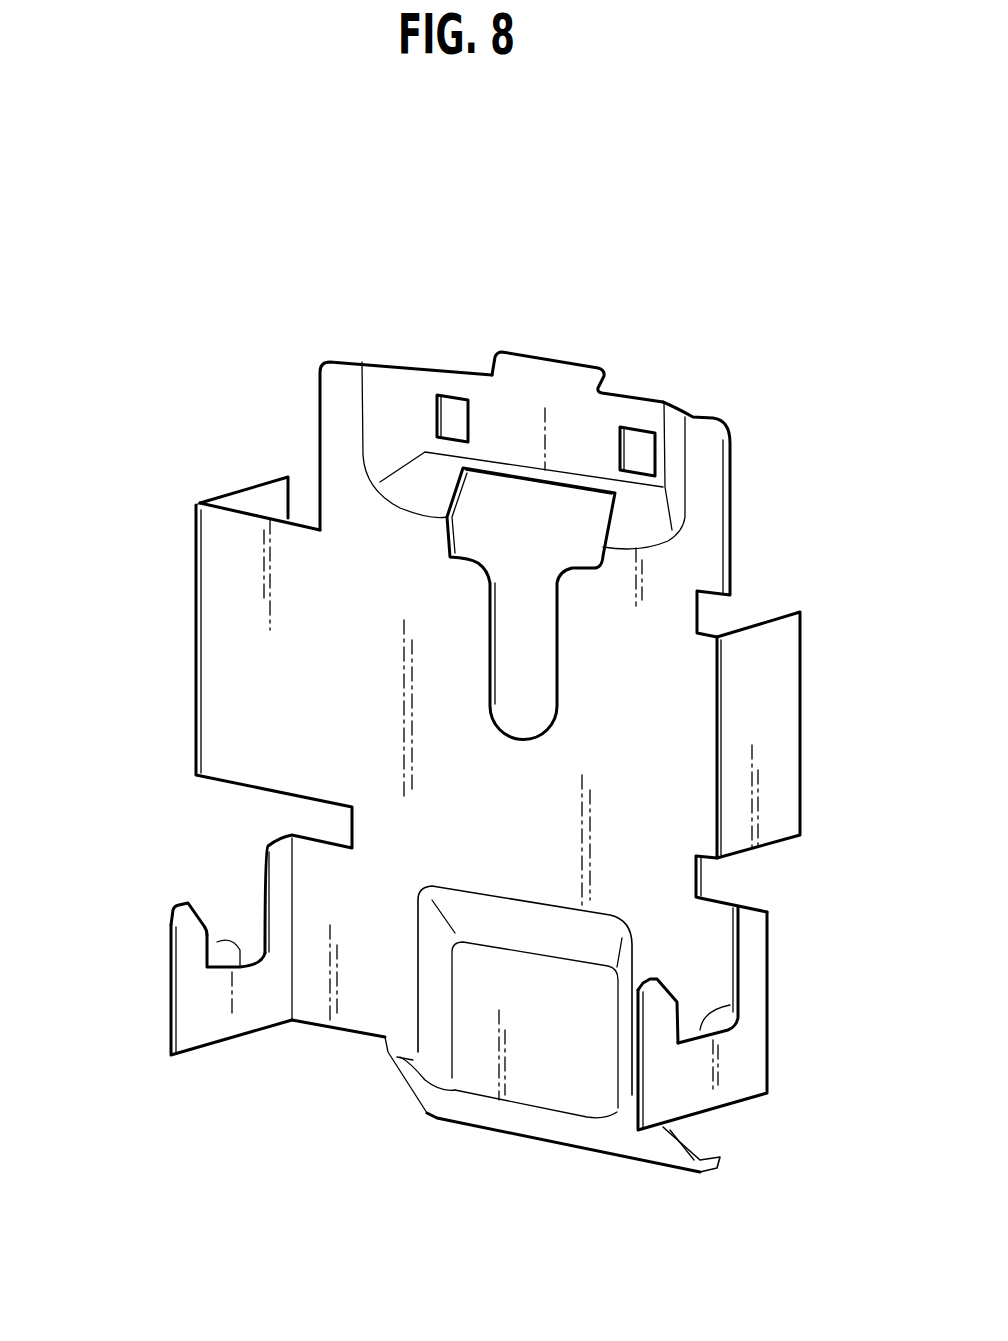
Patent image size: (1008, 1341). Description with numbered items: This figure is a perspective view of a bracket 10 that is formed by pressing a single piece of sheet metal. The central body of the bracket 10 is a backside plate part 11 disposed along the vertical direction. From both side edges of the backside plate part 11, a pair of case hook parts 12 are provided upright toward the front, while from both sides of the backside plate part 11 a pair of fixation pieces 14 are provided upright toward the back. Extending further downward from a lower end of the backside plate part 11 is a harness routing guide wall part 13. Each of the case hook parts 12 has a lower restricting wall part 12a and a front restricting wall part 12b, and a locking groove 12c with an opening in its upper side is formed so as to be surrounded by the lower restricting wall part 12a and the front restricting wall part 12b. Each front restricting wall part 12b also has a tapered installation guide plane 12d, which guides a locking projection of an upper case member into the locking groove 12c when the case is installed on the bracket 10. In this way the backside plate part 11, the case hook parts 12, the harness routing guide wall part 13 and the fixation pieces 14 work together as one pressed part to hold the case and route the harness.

The bracket 10 is at (386, 316).
The backside plate part 11 is at (630, 632).
The case hook parts 12 is at (234, 1047).
The lower restricting wall part 12a is at (212, 1005).
The front restricting wall part 12b is at (187, 938).
The locking groove 12c is at (223, 940).
The tapered installation guide plane 12d is at (200, 913).
The harness routing guide wall part 13 is at (528, 1118).
The fixation pieces 14 is at (260, 498).